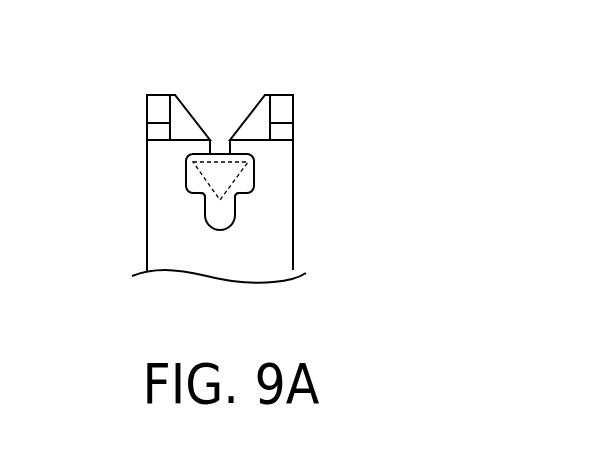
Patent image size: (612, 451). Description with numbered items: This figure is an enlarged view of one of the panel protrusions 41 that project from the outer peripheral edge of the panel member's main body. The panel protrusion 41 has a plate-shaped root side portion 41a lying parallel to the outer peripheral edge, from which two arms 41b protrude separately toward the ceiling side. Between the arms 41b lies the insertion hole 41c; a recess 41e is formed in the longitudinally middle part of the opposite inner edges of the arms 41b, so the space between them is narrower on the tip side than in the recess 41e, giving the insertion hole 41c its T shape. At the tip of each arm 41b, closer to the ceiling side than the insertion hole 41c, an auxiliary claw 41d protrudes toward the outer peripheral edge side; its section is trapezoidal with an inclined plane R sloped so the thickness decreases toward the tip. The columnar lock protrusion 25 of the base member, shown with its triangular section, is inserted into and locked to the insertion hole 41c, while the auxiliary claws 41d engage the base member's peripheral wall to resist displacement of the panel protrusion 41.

The panel protrusion 41 is at (228, 174).
The root side portion 41a is at (275, 252).
The arm 41b is at (162, 185).
The insertion hole 41c is at (200, 196).
The auxiliary claw 41d is at (158, 105).
The recess 41e is at (190, 168).
The inclined plane R is at (157, 117).
The lock protrusion 25 is at (256, 176).